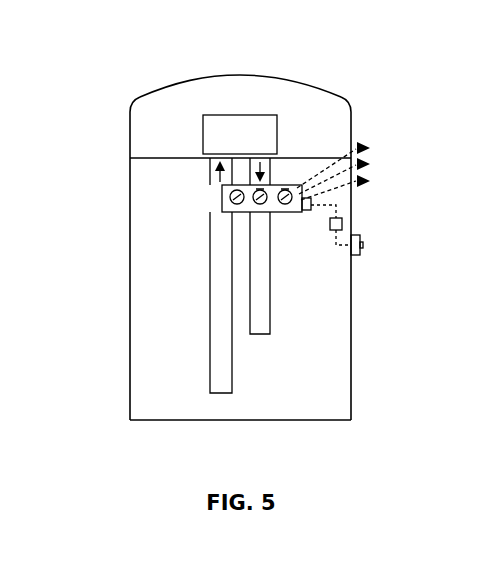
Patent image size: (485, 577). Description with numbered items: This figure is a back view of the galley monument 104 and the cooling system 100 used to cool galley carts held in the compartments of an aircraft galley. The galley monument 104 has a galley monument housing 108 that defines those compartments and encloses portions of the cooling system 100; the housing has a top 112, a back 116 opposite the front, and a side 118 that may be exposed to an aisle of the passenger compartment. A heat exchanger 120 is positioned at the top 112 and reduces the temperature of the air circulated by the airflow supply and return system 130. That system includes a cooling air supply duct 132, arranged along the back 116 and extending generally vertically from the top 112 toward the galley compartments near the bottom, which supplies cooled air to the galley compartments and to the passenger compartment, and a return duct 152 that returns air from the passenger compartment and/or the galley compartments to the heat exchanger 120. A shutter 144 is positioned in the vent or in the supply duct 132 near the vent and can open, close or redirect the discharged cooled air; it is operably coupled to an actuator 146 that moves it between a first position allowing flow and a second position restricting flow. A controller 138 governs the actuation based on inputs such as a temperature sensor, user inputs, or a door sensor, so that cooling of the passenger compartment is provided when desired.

The cooling system 100 is at (237, 232).
The galley monument 104 is at (128, 228).
The galley monument housing 108 is at (337, 94).
The top 112 is at (172, 86).
The back 116 is at (333, 378).
The side 118 is at (351, 305).
The heat exchanger 120 is at (228, 131).
The airflow supply and return system 130 is at (209, 293).
The cooling air supply duct 132 is at (265, 315).
The controller 138 is at (343, 223).
The shutter 144 is at (331, 200).
The actuator 146 is at (306, 212).
The return duct 152 is at (222, 354).